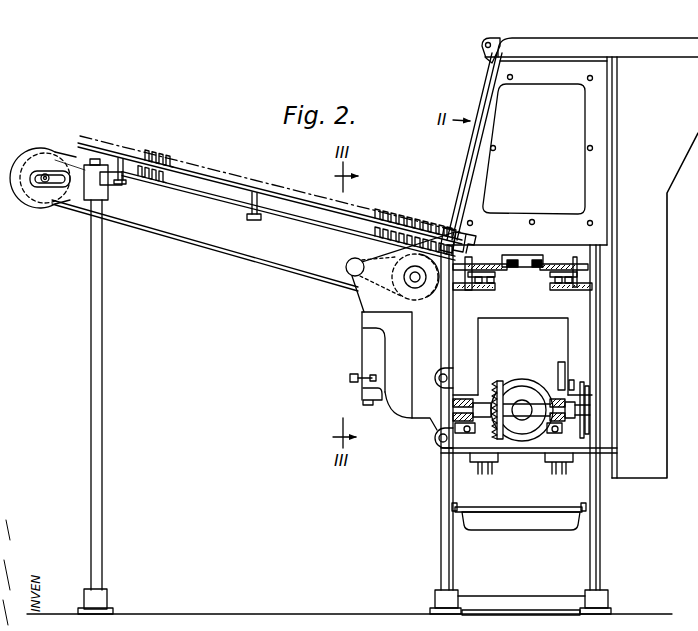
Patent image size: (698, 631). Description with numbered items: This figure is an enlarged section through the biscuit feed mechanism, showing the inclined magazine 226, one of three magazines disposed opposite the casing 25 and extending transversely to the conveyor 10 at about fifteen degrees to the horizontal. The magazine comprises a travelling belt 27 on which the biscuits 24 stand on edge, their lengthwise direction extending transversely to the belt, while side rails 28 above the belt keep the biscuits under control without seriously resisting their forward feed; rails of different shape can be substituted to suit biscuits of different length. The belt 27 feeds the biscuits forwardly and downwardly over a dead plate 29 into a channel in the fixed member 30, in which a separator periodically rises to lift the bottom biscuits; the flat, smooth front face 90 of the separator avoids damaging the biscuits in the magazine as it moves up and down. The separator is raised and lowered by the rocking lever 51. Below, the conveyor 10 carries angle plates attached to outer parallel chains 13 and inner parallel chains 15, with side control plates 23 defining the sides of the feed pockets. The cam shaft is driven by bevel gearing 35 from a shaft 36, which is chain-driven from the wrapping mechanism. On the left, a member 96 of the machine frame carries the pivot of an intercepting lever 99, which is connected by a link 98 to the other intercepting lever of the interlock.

The conveyor 10 is at (534, 253).
The outer parallel chains 13 is at (479, 291).
The inner parallel chains 15 is at (549, 284).
The side control plates 23 is at (478, 265).
The biscuits 24 is at (400, 225).
The casing 25 is at (660, 155).
The travelling belt 27 is at (310, 213).
The side rails 28 is at (287, 197).
The dead plate 29 is at (438, 234).
The fixed member 30 is at (471, 240).
The bevel gearing 35 is at (498, 385).
The shaft 36 is at (523, 405).
The lever 51 is at (362, 398).
The front face 90 is at (447, 226).
The member of the machine frame 96 is at (361, 318).
The intercepting lever 99 is at (362, 340).
The link 98 is at (355, 374).
The biscuit magazine 226 is at (218, 194).